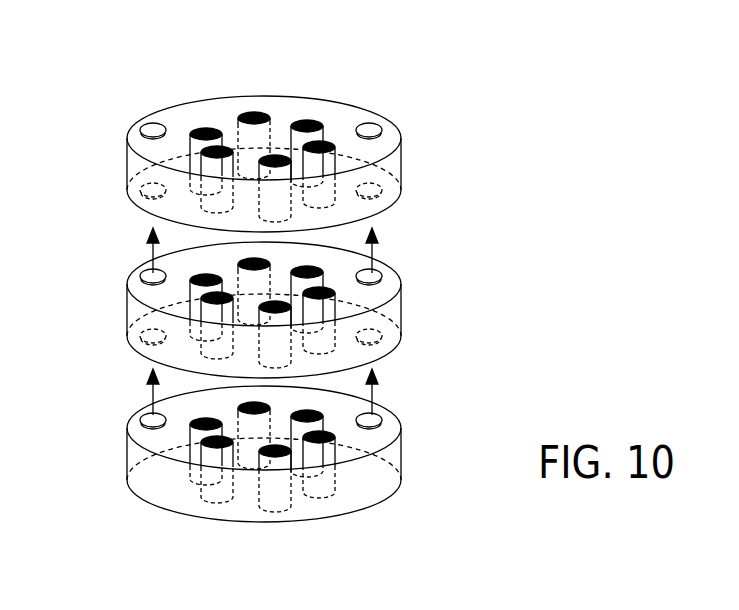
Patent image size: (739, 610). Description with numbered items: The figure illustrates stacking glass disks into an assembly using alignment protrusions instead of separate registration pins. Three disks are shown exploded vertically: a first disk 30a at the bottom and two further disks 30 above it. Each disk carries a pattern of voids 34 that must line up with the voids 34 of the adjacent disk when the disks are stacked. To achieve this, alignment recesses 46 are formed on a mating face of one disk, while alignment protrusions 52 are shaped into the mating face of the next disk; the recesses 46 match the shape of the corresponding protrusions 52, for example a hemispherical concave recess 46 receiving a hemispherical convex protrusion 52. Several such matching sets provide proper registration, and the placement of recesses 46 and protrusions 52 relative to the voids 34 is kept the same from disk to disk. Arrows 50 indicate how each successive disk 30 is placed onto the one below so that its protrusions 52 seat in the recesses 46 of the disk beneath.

The disk 30 is at (126, 172).
The first disk 30a is at (127, 455).
The voids 34 is at (320, 488).
The alignment recess 46 is at (371, 197).
The arrows 50 is at (148, 395).
The alignment protrusion 52 is at (153, 126).